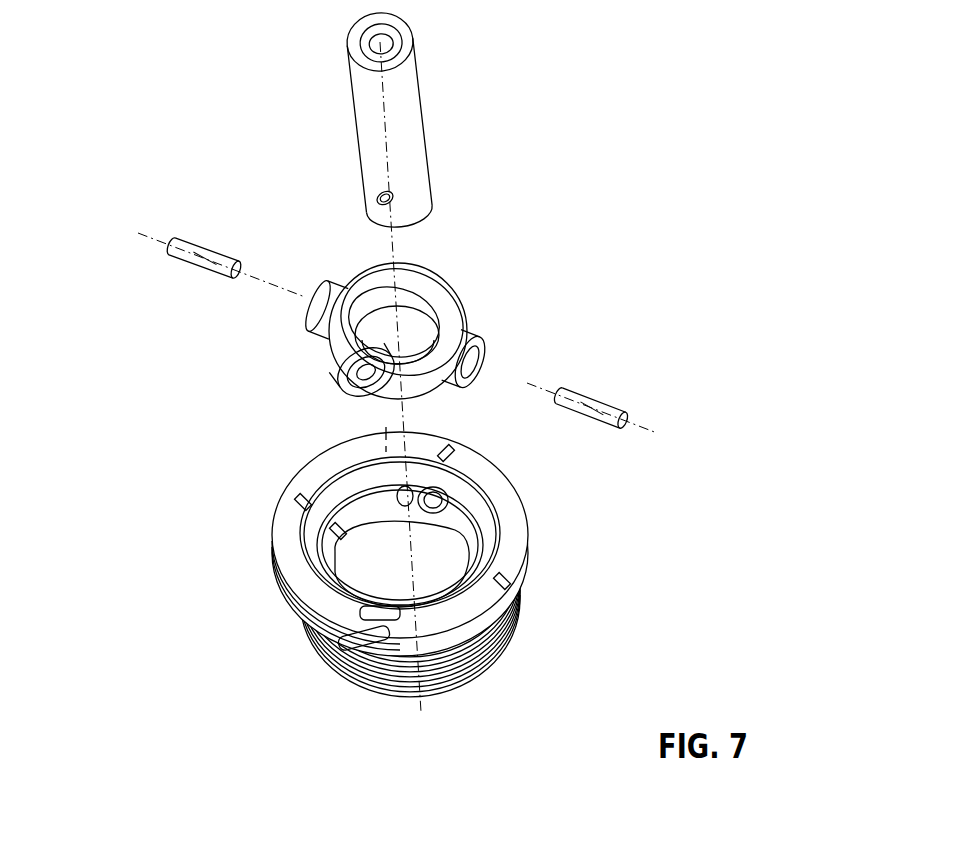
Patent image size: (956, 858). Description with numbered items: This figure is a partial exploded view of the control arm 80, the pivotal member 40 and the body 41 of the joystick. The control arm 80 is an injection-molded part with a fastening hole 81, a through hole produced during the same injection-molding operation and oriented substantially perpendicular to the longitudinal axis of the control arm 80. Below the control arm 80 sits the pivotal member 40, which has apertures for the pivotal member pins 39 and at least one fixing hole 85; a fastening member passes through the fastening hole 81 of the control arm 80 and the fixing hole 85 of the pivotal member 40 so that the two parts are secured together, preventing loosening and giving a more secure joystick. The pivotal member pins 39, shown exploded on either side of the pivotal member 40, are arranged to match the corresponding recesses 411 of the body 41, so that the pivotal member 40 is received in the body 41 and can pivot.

The control arm 80 is at (456, 134).
The fastening hole 81 is at (376, 194).
The pivotal member 40 is at (486, 292).
The pivotal member pin 39 is at (187, 265).
The fixing hole 85 is at (392, 311).
The body 41 is at (240, 574).
The recess 411 is at (350, 533).